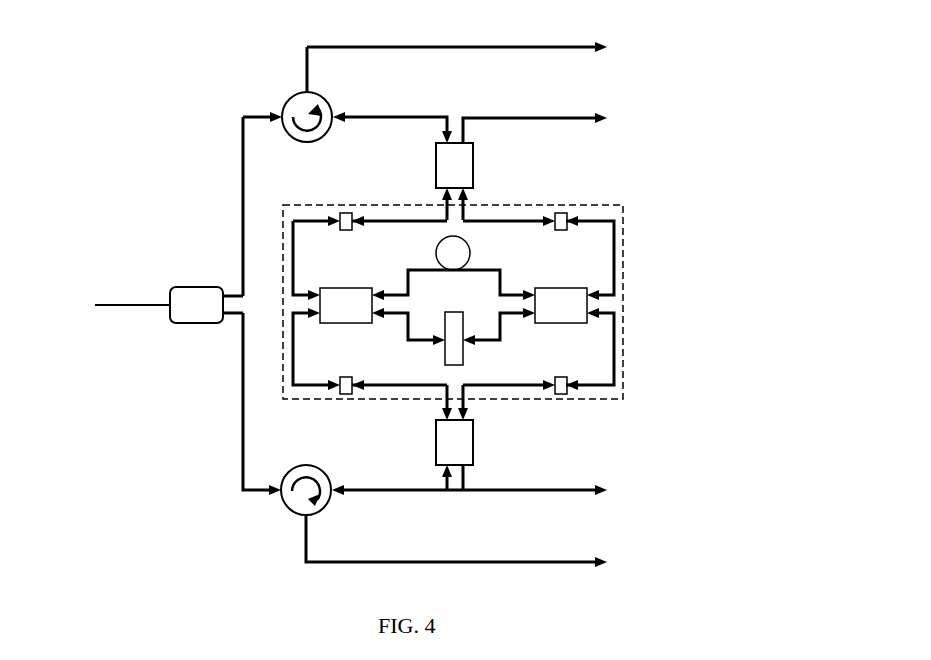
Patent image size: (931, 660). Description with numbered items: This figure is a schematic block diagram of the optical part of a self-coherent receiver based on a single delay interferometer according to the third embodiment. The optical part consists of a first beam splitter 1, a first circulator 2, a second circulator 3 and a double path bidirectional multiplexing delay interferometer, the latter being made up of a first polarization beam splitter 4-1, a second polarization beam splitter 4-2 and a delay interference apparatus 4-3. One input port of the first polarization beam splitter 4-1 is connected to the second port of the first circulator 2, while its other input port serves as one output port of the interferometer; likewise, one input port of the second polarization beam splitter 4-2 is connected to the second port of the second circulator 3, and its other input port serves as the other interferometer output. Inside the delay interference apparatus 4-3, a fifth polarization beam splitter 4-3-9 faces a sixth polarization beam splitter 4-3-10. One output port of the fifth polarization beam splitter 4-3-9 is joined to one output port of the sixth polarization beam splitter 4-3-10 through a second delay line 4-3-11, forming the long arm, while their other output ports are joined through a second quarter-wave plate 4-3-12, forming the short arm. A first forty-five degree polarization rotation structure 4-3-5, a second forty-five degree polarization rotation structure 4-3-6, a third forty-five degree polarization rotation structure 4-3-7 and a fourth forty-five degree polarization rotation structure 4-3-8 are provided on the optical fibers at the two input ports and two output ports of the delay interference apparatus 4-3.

The first beam splitter 1 is at (198, 323).
The first circulator 2 is at (291, 93).
The second circulator 3 is at (285, 511).
The first polarization beam splitter 4-1 is at (436, 143).
The second polarization beam splitter 4-2 is at (436, 448).
The delay interference apparatus 4-3 is at (623, 399).
The first 45° polarization rotation structure 4-3-5 is at (346, 213).
The second 45° polarization rotation structure 4-3-6 is at (697, 192).
The third 45° polarization rotation structure 4-3-7 is at (346, 394).
The fourth 45° polarization rotation structure 4-3-8 is at (566, 380).
The fifth polarization beam splitter 4-3-9 is at (340, 288).
The sixth polarization beam splitter 4-3-10 is at (712, 252).
The second delay line 4-3-11 is at (588, 192).
The second quarter-wave plate 4-3-12 is at (463, 365).